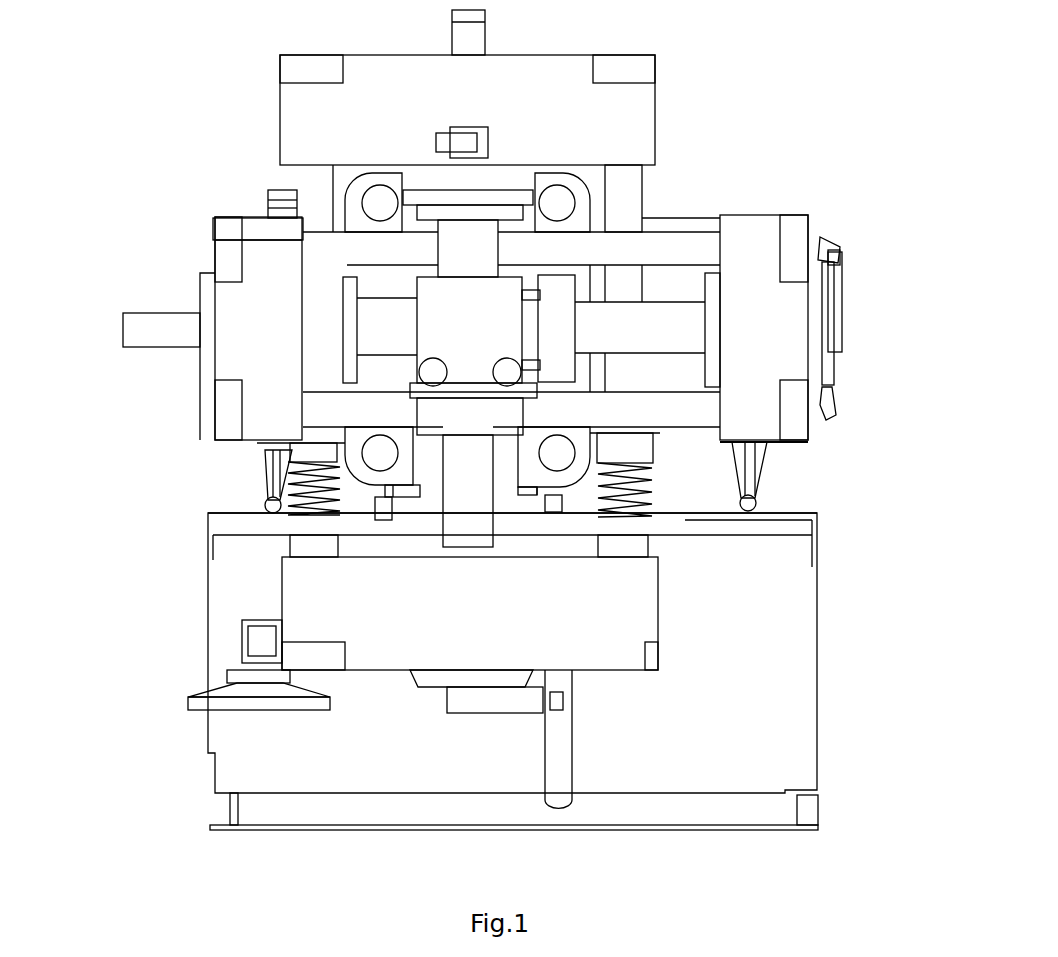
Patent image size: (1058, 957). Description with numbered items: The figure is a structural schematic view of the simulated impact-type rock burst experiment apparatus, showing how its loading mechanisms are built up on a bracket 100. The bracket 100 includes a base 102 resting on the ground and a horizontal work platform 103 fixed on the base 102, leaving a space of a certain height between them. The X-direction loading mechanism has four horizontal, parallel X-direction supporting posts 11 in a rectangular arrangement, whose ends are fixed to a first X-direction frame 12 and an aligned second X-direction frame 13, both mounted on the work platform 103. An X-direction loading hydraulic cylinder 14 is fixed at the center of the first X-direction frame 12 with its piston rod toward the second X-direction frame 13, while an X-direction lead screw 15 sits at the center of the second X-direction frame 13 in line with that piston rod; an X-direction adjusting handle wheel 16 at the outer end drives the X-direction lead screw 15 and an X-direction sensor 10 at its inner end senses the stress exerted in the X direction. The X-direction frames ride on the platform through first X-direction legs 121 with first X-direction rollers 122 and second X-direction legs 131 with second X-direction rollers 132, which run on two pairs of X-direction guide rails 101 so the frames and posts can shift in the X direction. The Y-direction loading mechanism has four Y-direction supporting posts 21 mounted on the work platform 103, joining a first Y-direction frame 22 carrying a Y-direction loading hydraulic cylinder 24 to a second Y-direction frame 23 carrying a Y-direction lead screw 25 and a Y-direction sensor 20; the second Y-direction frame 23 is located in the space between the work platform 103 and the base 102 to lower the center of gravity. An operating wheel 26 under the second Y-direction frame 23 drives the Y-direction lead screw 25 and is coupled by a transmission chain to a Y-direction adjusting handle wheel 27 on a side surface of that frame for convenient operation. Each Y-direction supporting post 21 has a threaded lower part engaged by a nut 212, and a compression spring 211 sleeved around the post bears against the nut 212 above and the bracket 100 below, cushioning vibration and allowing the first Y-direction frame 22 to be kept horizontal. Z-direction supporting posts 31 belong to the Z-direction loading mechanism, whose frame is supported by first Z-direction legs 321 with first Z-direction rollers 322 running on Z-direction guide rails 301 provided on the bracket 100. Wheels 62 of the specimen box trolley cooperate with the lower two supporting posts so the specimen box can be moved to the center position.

The bracket 100 is at (848, 727).
The X-direction sensor 10 is at (562, 307).
The X-direction guide rails 101 is at (237, 515).
The base 102 is at (765, 807).
The work platform 103 is at (733, 527).
The X-direction supporting posts 11 is at (668, 327).
The first X-direction frame 12 is at (257, 412).
The first X-direction legs 121 is at (268, 488).
The first X-direction roller 122 is at (267, 507).
The second X-direction frame 13 is at (830, 243).
The second X-direction legs 131 is at (768, 480).
The second X-direction roller 132 is at (765, 505).
The X-direction loading hydraulic cylinder 14 is at (332, 282).
The X-direction lead screw 15 is at (755, 308).
The X-direction adjusting handle wheel 16 is at (835, 302).
The Y-direction sensor 20 is at (442, 417).
The Y-direction supporting posts 21 is at (315, 195).
The compression spring 211 is at (257, 457).
The nut 212 is at (640, 452).
The first Y-direction frame 22 is at (416, 80).
The second Y-direction frame 23 is at (580, 662).
The Y-direction loading hydraulic cylinder 24 is at (477, 185).
The Y-direction lead screw 25 is at (457, 458).
The operating wheel 26 is at (467, 680).
The Y-direction adjusting handle wheel 27 is at (258, 700).
The Z-direction guide rails 301 is at (377, 517).
The Z-direction supporting posts 31 is at (380, 203).
The first Z-direction legs 321 is at (395, 492).
The first Z-direction roller 322 is at (380, 500).
The wheels 62 is at (432, 373).